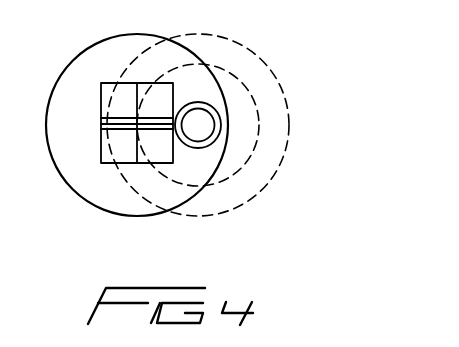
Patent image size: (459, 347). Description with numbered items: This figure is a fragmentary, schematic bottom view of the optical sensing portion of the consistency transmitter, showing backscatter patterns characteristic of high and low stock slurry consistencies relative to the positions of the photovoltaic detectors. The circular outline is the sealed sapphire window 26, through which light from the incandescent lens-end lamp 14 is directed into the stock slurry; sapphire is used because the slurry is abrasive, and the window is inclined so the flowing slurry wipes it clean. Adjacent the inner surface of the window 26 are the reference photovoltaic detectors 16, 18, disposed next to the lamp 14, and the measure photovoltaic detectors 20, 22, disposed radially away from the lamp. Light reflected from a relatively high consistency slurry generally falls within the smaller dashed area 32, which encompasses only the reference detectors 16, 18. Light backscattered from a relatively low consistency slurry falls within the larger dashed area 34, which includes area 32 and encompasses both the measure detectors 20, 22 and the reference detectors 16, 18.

The incandescent lens-end lamp 14 is at (205, 110).
The reference photovoltaic detector 16 is at (164, 86).
The reference photovoltaic detector 18 is at (164, 157).
The measure photovoltaic detector 20 is at (103, 90).
The measure photovoltaic detector 22 is at (98, 164).
The sealed sapphire window 26 is at (121, 203).
The area 32 is at (258, 125).
The area 34 is at (268, 157).